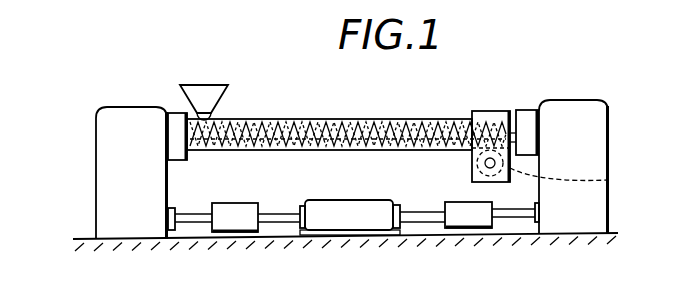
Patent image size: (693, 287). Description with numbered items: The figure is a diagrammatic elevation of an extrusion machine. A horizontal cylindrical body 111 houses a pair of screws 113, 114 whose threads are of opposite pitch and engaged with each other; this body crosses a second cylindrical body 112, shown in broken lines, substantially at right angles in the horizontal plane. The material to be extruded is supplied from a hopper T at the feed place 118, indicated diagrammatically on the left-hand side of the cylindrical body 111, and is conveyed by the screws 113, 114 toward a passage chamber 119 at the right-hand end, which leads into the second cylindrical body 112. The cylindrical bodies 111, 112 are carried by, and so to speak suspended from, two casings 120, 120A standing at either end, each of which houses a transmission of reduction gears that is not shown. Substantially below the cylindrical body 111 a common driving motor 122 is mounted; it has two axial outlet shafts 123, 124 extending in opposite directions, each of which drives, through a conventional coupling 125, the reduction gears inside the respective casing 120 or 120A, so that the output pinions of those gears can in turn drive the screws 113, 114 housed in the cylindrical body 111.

The hopper T is at (200, 79).
The cylindrical body 111 is at (262, 119).
The cylindrical body 112 is at (608, 179).
The screw 113 is at (348, 109).
The screw 114 is at (316, 123).
The feed place 118 is at (198, 137).
The passage chamber 119 is at (489, 147).
The casing 120 is at (114, 107).
The casing 120A is at (609, 112).
The common driving motor 122 is at (338, 210).
The axial outlet shaft 123 is at (279, 213).
The axial outlet shaft 124 is at (425, 211).
The coupling 125 is at (242, 222).